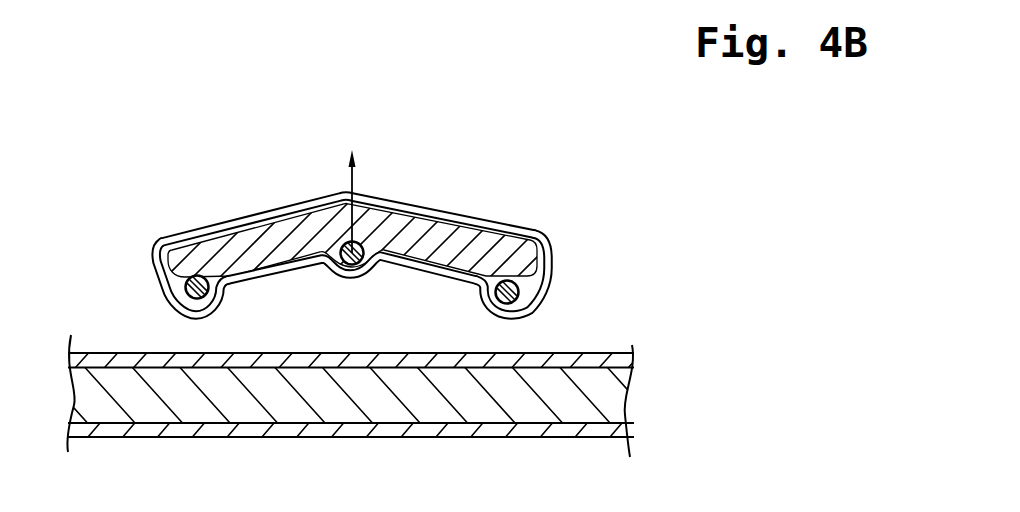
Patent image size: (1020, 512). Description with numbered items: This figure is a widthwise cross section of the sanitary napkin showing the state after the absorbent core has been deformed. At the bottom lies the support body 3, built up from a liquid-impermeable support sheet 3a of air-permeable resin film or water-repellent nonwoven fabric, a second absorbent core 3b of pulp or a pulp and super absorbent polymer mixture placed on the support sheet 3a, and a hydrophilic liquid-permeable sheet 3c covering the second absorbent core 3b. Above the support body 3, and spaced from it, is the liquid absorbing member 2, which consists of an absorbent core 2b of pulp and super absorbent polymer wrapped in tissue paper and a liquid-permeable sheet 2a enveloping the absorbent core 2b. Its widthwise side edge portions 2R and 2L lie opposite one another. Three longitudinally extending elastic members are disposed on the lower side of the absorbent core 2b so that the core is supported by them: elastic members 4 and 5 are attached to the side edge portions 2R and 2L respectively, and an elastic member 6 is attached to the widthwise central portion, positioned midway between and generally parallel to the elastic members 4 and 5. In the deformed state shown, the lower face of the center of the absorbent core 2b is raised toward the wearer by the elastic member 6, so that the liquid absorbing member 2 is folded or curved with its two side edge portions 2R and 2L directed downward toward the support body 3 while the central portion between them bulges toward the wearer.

The liquid absorbing member 2 is at (378, 165).
The liquid-permeable sheet 2a is at (277, 208).
The absorbent core 2b is at (450, 243).
The side edge portion 2L is at (153, 263).
The side edge portion 2R is at (553, 270).
The support body 3 is at (740, 352).
The support sheet 3a is at (628, 435).
The second absorbent core 3b is at (615, 405).
The liquid-permeable sheet 3c is at (630, 367).
The elastic member 4 is at (523, 291).
The elastic member 5 is at (188, 291).
The elastic member 6 is at (370, 270).